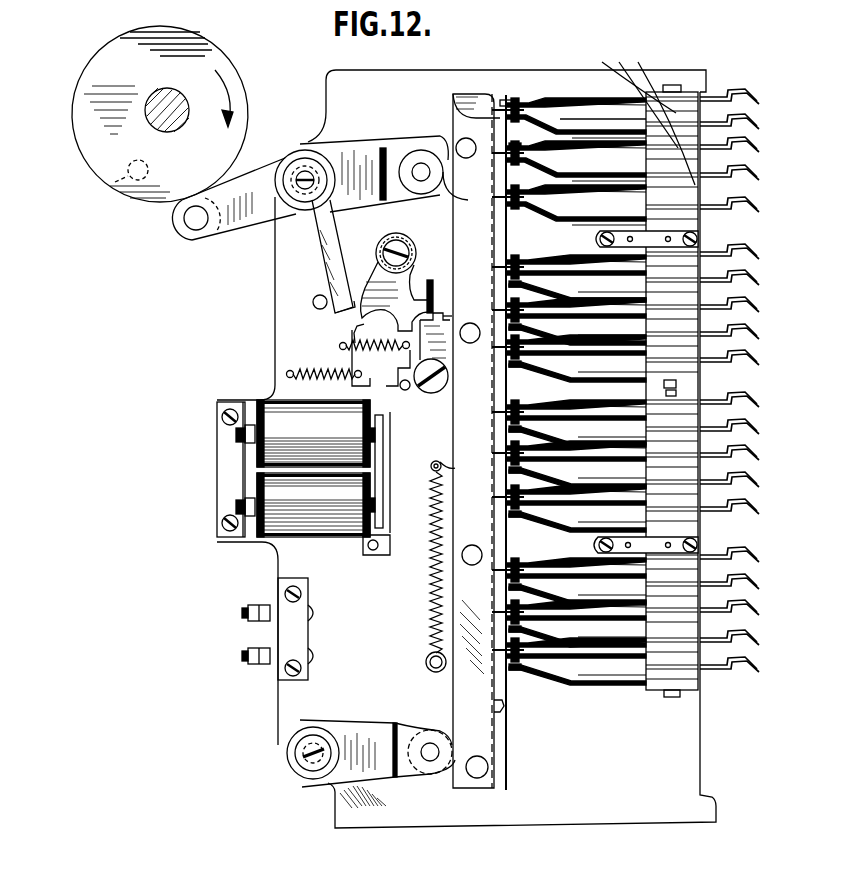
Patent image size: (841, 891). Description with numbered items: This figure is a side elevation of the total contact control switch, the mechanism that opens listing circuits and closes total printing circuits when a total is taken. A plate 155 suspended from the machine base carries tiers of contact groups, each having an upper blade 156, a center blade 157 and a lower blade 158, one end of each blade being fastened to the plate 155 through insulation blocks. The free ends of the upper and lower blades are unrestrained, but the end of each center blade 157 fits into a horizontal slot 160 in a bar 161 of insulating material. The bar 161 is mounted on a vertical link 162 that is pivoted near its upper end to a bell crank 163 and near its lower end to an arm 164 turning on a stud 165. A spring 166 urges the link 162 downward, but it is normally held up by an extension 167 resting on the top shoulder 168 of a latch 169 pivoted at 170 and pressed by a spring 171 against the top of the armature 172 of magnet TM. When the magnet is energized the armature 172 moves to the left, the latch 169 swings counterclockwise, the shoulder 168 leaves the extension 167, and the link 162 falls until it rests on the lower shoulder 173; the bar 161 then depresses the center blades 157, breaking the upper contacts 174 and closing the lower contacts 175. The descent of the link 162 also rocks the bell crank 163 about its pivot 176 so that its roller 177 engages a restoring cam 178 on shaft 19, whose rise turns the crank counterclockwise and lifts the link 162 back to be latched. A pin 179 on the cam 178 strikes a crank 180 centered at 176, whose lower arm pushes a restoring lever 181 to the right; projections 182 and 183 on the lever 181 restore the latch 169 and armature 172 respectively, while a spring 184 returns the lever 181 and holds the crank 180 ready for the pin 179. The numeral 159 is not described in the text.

The shaft 19 is at (176, 98).
The plate 155 is at (280, 306).
The upper blade 156 is at (556, 103).
The center blade 157 is at (553, 112).
The lower blade 158 is at (548, 129).
The terminal 159 is at (682, 170).
The horizontal slot 160 is at (502, 704).
The bar 161 is at (504, 546).
The vertical link 162 is at (444, 196).
The bell crank 163 is at (362, 160).
The arm 164 is at (362, 726).
The stud 165 is at (312, 754).
The spring 166 is at (432, 570).
The extension 167 is at (437, 284).
The top shoulder 168 is at (437, 302).
The latch 169 is at (426, 352).
The pivot 170 is at (440, 382).
The spring 171 is at (355, 340).
The armature 172 is at (390, 446).
The lower shoulder 173 is at (446, 318).
The upper contacts 174 is at (512, 100).
The lower contacts 175 is at (466, 104).
The pivot 176 is at (305, 172).
The roller 177 is at (186, 228).
The restoring cam 178 is at (100, 156).
The pin 179 is at (122, 178).
The crank 180 is at (316, 238).
The restoring lever 181 is at (370, 268).
The projection 182 is at (358, 300).
The projection 183 is at (352, 383).
The spring 184 is at (322, 368).